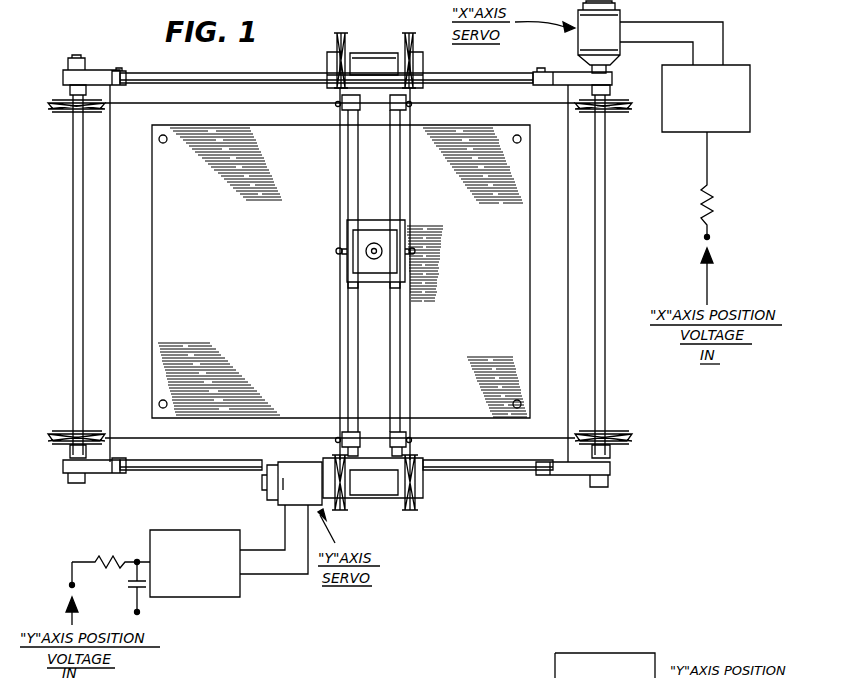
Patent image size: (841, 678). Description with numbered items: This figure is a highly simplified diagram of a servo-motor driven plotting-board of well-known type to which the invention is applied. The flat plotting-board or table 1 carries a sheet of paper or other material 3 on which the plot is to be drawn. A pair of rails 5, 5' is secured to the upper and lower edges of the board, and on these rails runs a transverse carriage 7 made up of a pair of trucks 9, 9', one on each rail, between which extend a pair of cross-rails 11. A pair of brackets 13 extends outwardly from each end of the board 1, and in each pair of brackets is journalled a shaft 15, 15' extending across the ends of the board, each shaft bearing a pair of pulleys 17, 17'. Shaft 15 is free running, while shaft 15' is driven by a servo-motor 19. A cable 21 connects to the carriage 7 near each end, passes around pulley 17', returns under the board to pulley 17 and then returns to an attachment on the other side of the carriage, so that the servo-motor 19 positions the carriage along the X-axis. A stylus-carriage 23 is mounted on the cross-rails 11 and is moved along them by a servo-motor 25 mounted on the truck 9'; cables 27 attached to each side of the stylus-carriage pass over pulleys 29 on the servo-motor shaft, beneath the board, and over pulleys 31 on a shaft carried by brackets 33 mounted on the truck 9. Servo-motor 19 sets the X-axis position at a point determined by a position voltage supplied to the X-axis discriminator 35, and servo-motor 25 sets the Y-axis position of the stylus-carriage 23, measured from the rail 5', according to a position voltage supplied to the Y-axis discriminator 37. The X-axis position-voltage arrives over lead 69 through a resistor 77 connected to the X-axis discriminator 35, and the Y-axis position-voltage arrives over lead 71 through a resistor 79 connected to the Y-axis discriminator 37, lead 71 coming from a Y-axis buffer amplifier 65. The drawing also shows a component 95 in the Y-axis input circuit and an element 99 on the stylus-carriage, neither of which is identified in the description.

The plotting-board 1 is at (110, 271).
The sheet of paper 3 is at (341, 271).
The rail 5 is at (326, 63).
The rail 5' is at (336, 479).
The transverse carriage 7 is at (375, 115).
The truck 9 is at (374, 104).
The truck 9' is at (374, 441).
The cross-rails 11 is at (390, 356).
The brackets 13 is at (90, 72).
The shaft 15 is at (63, 275).
The shaft 15' is at (621, 275).
The pulleys 17 is at (63, 271).
The pulleys 17' is at (610, 271).
The servo-motor 19 is at (620, 19).
The cable 21 is at (272, 104).
The stylus-carriage 23 is at (347, 228).
The servo-motor 25 is at (279, 508).
The cables 27 is at (340, 344).
The pulleys 29 is at (403, 505).
The pulleys 31 is at (334, 32).
The brackets 33 is at (370, 55).
The X-axis discriminator 35 is at (750, 65).
The Y-axis discriminator 37 is at (226, 528).
The Y-axis buffer amplifier 65 is at (556, 656).
The lead 69 is at (704, 237).
The lead 71 is at (70, 585).
The resistor 77 is at (700, 204).
The resistor 79 is at (119, 560).
The capacitor 95 is at (128, 585).
The stylus / tool 99 is at (367, 250).